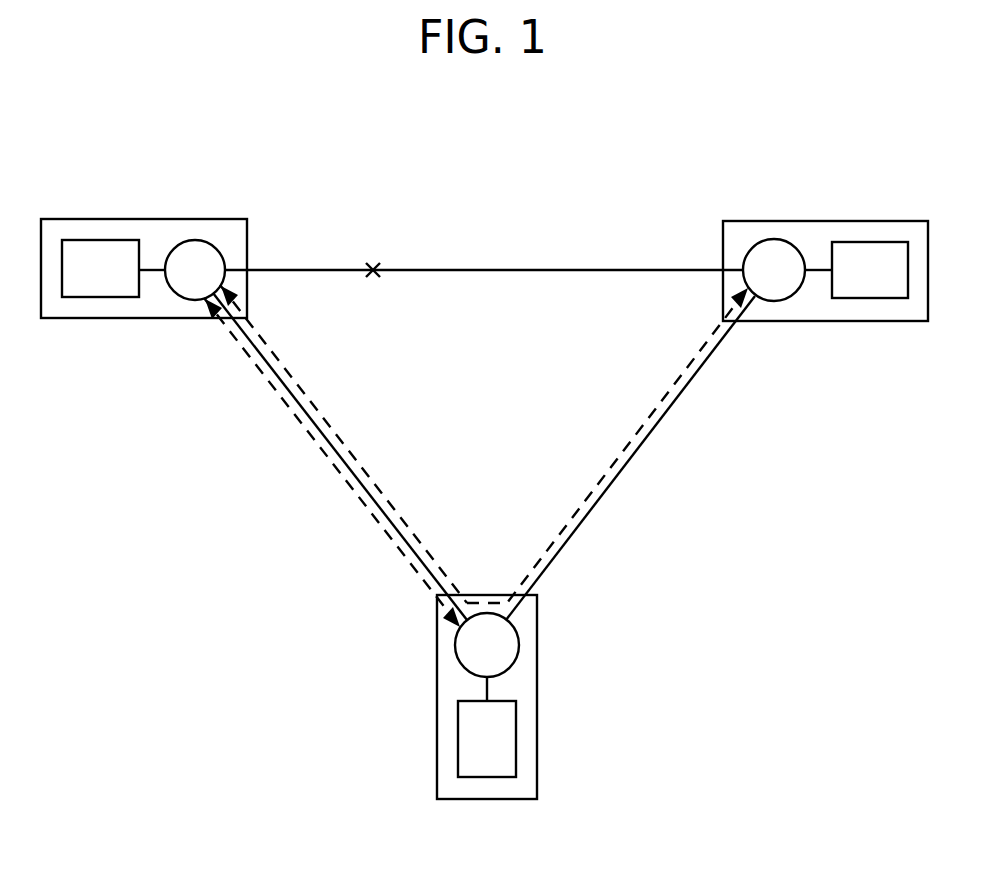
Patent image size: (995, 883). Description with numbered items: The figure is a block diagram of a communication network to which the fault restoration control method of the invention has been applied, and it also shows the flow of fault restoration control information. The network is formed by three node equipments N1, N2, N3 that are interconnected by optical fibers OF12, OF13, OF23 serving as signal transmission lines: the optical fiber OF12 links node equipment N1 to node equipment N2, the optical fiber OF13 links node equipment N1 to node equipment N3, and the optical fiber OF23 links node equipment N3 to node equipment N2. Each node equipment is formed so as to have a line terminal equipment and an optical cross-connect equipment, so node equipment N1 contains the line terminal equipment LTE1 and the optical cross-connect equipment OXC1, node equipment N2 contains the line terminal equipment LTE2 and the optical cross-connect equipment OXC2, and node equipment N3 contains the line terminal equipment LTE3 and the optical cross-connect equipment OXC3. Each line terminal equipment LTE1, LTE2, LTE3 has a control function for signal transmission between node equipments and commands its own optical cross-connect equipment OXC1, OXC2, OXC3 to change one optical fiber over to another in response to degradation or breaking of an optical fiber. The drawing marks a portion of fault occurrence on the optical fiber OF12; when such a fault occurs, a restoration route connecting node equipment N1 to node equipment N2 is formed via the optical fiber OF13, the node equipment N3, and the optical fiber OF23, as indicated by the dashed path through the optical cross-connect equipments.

The node equipment N1 is at (110, 219).
The node equipment N2 is at (860, 221).
The node equipment N3 is at (537, 633).
The optical cross-connect equipment OXC1 is at (197, 250).
The optical cross-connect equipment OXC2 is at (773, 250).
The optical cross-connect equipment OXC3 is at (463, 650).
The line terminal equipment LTE1 is at (100, 285).
The line terminal equipment LTE2 is at (870, 290).
The line terminal equipment LTE3 is at (502, 733).
The optical fiber OF12 is at (542, 270).
The optical fiber OF13 is at (376, 405).
The optical fiber OF23 is at (588, 510).